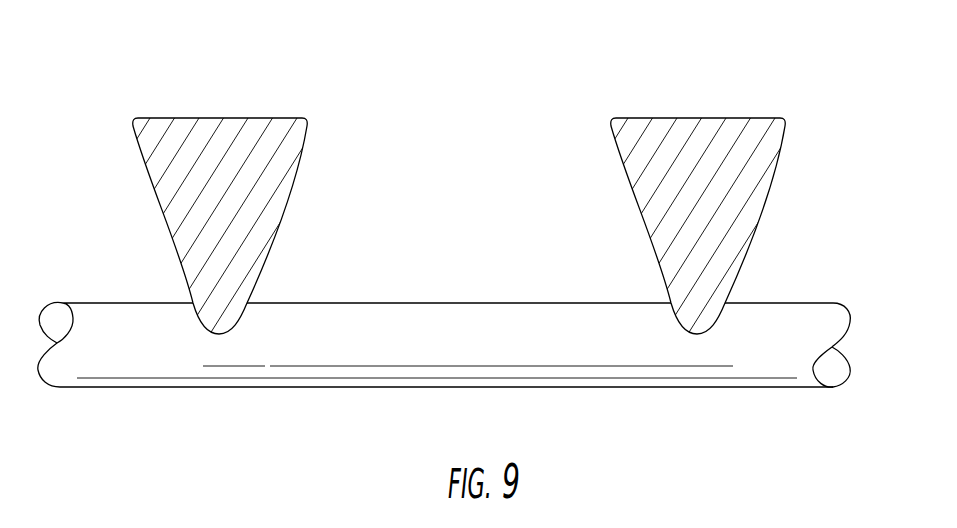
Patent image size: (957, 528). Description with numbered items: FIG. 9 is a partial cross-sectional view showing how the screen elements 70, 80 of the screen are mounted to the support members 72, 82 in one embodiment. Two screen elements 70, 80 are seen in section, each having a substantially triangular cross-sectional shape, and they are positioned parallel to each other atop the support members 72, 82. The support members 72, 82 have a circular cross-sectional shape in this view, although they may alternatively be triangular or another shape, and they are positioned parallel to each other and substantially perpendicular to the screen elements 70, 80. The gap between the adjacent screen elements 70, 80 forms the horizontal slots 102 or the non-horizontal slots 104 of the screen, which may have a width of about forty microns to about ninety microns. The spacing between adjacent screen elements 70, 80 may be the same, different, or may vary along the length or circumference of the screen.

The horizontally oriented screen element 70 is at (450, 191).
The non-horizontally oriented screen element 80 is at (282, 111).
The support member 72 is at (444, 383).
The support member 82 is at (318, 388).
The horizontal slot 102 is at (450, 253).
The non-horizontal slot 104 is at (450, 253).